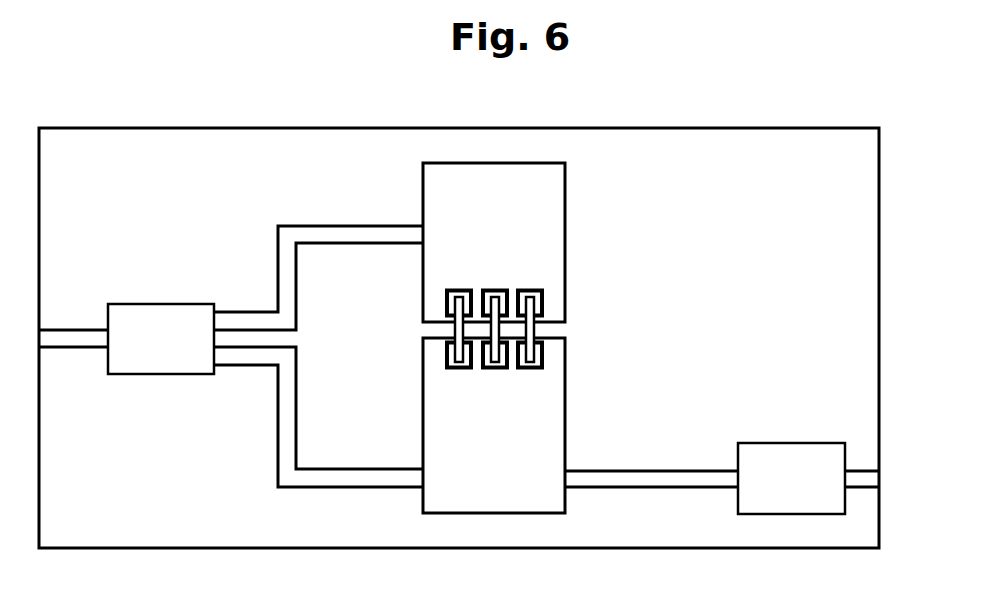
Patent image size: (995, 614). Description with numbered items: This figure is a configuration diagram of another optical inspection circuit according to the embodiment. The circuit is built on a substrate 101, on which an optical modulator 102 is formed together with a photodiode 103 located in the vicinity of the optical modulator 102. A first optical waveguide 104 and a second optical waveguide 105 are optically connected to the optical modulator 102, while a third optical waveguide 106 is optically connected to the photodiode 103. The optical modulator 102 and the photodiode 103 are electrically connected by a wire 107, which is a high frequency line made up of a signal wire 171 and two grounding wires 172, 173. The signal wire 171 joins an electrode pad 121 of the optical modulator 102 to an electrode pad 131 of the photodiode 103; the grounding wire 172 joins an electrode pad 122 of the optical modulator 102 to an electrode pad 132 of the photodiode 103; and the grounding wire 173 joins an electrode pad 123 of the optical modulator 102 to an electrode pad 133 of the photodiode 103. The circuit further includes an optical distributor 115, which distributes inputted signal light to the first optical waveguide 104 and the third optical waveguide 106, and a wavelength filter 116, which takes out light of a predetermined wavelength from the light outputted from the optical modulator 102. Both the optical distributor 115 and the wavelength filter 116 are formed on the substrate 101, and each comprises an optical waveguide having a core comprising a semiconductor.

The substrate 101 is at (879, 200).
The optical modulator 102 is at (493, 514).
The photodiode 103 is at (493, 163).
The first optical waveguide 104 is at (367, 488).
The second optical waveguide 105 is at (688, 470).
The third optical waveguide 106 is at (367, 226).
The wire 107 is at (556, 335).
The optical distributor 115 is at (163, 304).
The wavelength filter 116 is at (793, 443).
The electrode pad 121 is at (493, 370).
The electrode pad 122 is at (460, 370).
The electrode pad 123 is at (530, 370).
The electrode pad 131 is at (494, 288).
The electrode pad 132 is at (460, 288).
The electrode pad 133 is at (529, 288).
The signal wire 171 is at (522, 338).
The grounding wire 172 is at (490, 251).
The grounding wire 173 is at (492, 405).